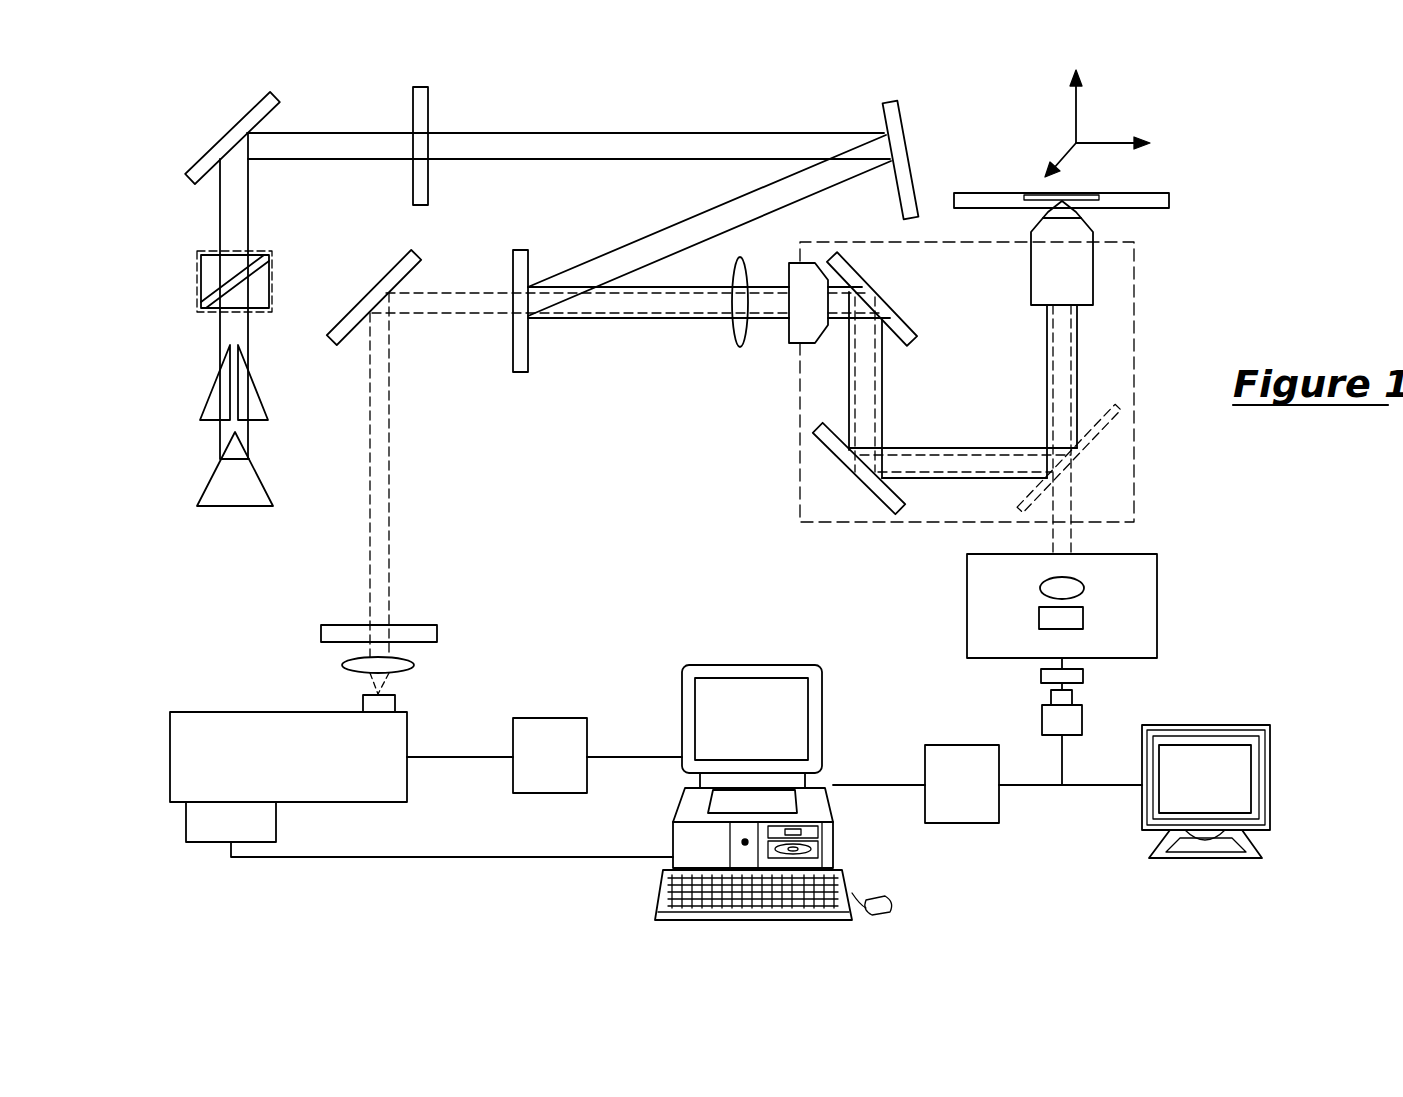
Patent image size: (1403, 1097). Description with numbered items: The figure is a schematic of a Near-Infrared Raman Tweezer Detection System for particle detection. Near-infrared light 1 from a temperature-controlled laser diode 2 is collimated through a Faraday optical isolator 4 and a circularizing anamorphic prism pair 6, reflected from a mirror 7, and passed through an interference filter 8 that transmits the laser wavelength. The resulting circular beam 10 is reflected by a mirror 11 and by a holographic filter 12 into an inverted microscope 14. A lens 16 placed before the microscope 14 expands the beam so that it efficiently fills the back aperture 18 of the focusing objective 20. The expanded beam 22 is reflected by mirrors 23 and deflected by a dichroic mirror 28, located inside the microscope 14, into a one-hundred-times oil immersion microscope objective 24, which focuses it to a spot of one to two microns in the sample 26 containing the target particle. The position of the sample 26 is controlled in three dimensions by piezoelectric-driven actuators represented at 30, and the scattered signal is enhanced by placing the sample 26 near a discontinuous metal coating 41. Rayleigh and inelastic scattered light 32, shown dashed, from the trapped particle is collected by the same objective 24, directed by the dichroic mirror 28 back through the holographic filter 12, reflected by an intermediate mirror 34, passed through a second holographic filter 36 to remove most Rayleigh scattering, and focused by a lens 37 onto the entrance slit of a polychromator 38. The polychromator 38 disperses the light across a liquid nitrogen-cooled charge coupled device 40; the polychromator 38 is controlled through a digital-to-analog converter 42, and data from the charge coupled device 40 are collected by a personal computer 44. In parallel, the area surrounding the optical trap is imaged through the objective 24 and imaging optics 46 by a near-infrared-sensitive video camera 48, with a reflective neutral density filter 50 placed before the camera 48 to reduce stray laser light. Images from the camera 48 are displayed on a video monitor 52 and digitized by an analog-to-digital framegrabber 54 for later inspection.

The light 1 is at (237, 424).
The laser diode 2 is at (211, 478).
The Faraday optical isolator 4 is at (211, 394).
The circularizing anamorphic prism pair 6 is at (197, 284).
The mirror 7 is at (230, 126).
The interference filter 8 is at (421, 87).
The circular beam 10 is at (554, 132).
The mirror 11 is at (905, 121).
The holographic filter 12 is at (517, 373).
The inverted microscope 14 is at (800, 512).
The lens 16 is at (735, 338).
The back aperture 18 is at (786, 334).
The focusing objective 20 is at (798, 320).
The expanded beam 22 is at (882, 398).
The mirrors 23 is at (918, 326).
The oil immersion microscope objective 24 is at (1093, 267).
The sample 26 is at (1169, 200).
The dichroic mirror 28 is at (1097, 440).
The piezoelectric-driven actuators 30 is at (1103, 143).
The scattered light 32 is at (382, 510).
The intermediate mirror 34 is at (348, 343).
The second holographic filter 36 is at (405, 625).
The lens 37 is at (414, 665).
The polychromator 38 is at (278, 773).
The charge coupled device 40 is at (219, 835).
The discontinuous metal coating 41 is at (1035, 194).
The digital-to-analog converter 42 is at (538, 773).
The personal computer 44 is at (660, 878).
The imaging optics 46 is at (1158, 600).
The video camera 48 is at (1082, 720).
The reflective neutral density filter 50 is at (1040, 674).
The video monitor 52 is at (1142, 813).
The analog-to-digital framegrabber 54 is at (950, 800).